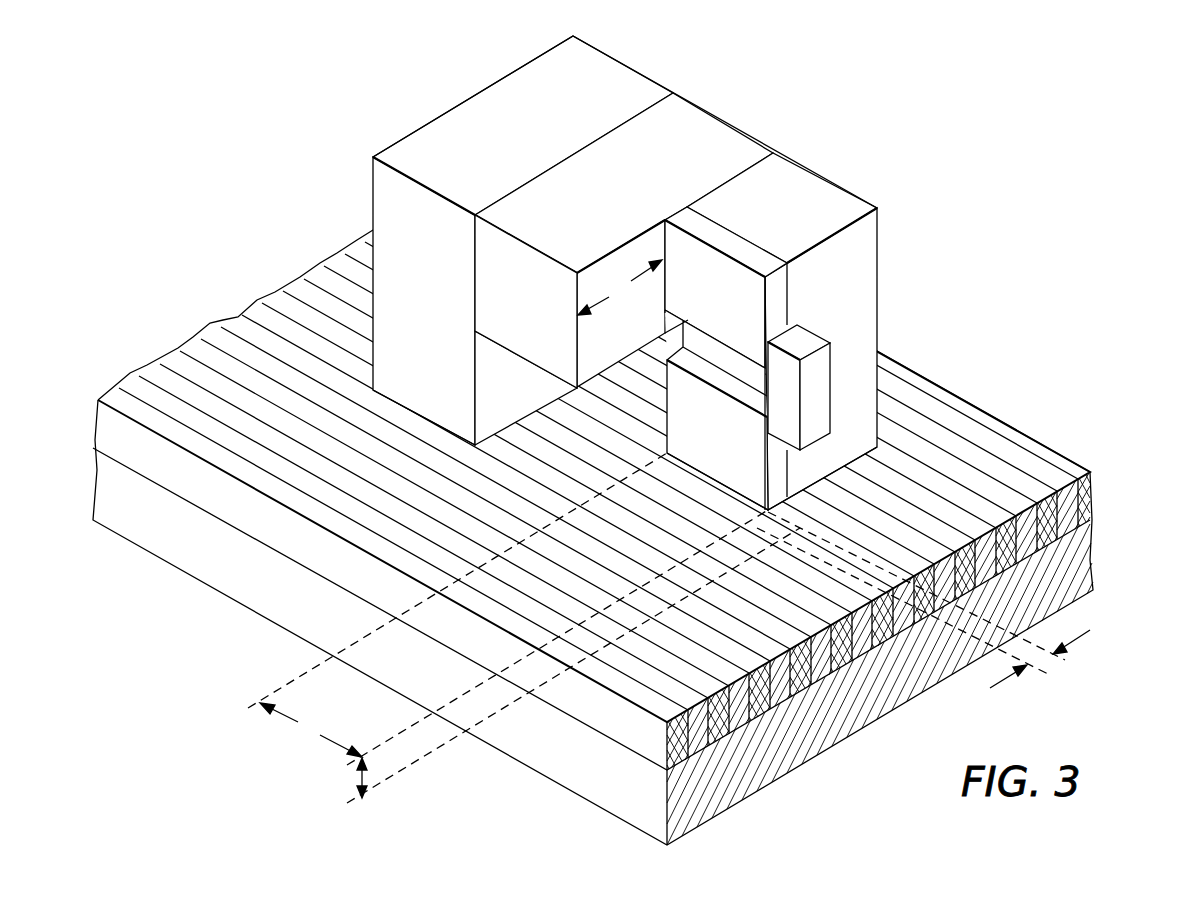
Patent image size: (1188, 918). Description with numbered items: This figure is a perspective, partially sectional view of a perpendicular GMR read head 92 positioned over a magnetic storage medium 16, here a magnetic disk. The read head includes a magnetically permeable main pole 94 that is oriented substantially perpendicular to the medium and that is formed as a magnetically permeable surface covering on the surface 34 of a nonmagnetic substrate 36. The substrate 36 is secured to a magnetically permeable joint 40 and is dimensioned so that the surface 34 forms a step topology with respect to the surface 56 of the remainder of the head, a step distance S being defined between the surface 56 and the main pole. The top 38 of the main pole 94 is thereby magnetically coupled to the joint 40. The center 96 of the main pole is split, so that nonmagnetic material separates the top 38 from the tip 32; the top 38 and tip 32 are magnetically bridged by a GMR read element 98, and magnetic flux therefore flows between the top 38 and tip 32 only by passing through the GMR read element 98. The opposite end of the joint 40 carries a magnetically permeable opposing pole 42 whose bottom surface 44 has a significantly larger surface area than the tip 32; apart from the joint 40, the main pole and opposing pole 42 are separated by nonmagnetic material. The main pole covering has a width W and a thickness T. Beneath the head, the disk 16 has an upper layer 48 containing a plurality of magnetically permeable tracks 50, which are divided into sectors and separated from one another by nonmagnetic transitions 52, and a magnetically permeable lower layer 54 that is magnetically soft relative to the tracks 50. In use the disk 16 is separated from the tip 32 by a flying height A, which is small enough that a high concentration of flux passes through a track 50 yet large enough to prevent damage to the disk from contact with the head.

The magnetic storage medium 16 is at (1042, 389).
The tip 32 is at (745, 512).
The surface 34 is at (783, 297).
The nonmagnetic substrate 36 is at (763, 223).
The top 38 is at (680, 277).
The joint 40 is at (608, 195).
The opposing pole 42 is at (403, 281).
The bottom surface 44 is at (433, 432).
The upper layer 48 is at (87, 421).
The tracks 50 is at (1015, 478).
The nonmagnetic transitions 52 is at (927, 452).
The lower layer 54 is at (1093, 548).
The surface 56 is at (505, 315).
The GMR read head 92 is at (910, 160).
The main pole 94 is at (718, 306).
The center 96 is at (708, 342).
The GMR read element 98 is at (767, 400).
The step distance S is at (620, 287).
The thickness T is at (311, 730).
The flying height A is at (358, 787).
The width W is at (1055, 647).